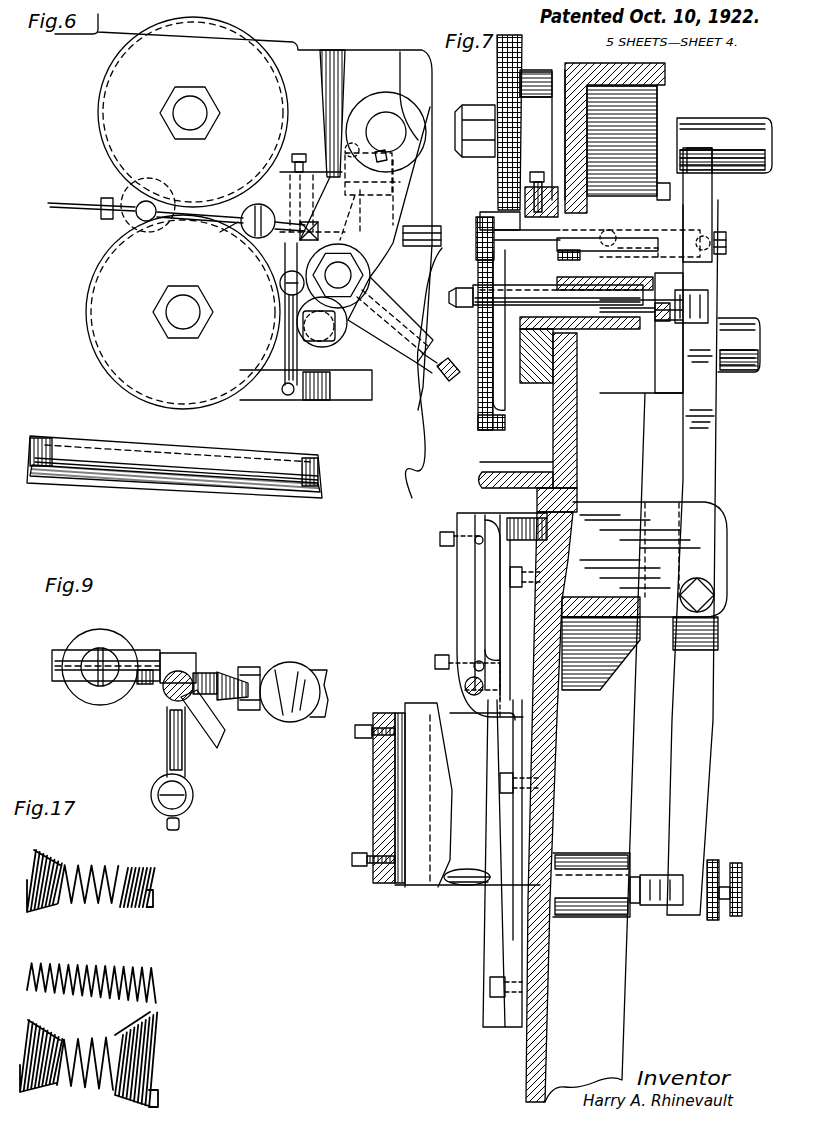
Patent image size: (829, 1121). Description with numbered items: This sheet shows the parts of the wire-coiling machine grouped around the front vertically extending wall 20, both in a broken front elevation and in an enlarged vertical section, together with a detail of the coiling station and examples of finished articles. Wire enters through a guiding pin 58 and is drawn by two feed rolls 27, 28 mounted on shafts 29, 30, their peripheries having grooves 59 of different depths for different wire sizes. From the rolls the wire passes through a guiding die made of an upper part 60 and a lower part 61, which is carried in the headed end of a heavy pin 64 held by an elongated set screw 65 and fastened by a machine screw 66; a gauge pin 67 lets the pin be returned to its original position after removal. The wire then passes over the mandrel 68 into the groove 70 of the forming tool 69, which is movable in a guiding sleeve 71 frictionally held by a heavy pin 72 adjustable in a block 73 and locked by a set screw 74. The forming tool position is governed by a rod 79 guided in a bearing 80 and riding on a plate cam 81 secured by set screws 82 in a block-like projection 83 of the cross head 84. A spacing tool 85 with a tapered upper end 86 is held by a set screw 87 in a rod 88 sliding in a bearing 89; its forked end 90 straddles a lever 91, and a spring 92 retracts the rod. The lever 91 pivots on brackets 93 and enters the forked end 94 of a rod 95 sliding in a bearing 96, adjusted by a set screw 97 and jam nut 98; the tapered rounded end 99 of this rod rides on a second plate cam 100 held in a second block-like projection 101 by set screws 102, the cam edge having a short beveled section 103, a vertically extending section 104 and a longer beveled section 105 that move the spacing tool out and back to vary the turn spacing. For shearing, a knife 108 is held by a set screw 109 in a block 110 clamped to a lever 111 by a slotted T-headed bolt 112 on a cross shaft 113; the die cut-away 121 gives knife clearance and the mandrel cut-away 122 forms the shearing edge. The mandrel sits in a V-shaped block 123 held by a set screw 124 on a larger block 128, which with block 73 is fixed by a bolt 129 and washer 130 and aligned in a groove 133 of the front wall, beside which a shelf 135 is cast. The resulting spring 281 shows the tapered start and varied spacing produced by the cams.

In FIG. 7, the front vertically extending wall 20 is at (565, 76).
In FIG. 6, the feed roll 27 is at (100, 91).
In FIG. 7, the feed roll 27 is at (518, 56).
In FIG. 6, the feed roll 28 is at (88, 314).
In FIG. 7, the feed roll 28 is at (482, 430).
In FIG. 6, the upper feed roll shaft 29 is at (190, 113).
In FIG. 7, the upper feed roll shaft 29 is at (732, 122).
In FIG. 6, the lower feed roll shaft 30 is at (183, 312).
In FIG. 7, the lower feed roll shaft 30 is at (740, 372).
In FIG. 6, the guiding pin 58 is at (128, 215).
In FIG. 7, the grooves 59 is at (497, 70).
In FIG. 6, the upper guiding die part 60 is at (288, 207).
In FIG. 7, the upper guiding die part 60 is at (498, 226).
In FIG. 9, the upper guiding die part 60 is at (145, 650).
In FIG. 6, the lower guiding die part 61 is at (222, 234).
In FIG. 9, the lower guiding die part 61 is at (56, 674).
In FIG. 7, the heavy pin 64 is at (609, 230).
In FIG. 9, the heavy pin 64 is at (78, 645).
In FIG. 7, the elongated set screw 65 is at (628, 234).
In FIG. 6, the machine screw 66 is at (252, 235).
In FIG. 7, the machine screw 66 is at (478, 233).
In FIG. 9, the machine screw 66 is at (90, 681).
In FIG. 7, the gauge pin 67 is at (722, 230).
In FIG. 6, the mandrel 68 is at (307, 220).
In FIG. 7, the mandrel 68 is at (582, 238).
In FIG. 9, the mandrel 68 is at (200, 672).
In FIG. 7, the forming tool 69 is at (450, 257).
In FIG. 9, the forming tool 69 is at (232, 672).
In FIG. 9, the groove 70 is at (254, 667).
In FIG. 6, the guiding sleeve 71 is at (411, 258).
In FIG. 9, the guiding sleeve 71 is at (322, 670).
In FIG. 9, the heavy pin 72 is at (288, 662).
In FIG. 6, the block 73 is at (374, 374).
In FIG. 6, the set screw 74 is at (356, 143).
In FIG. 7, the rod 79 is at (485, 684).
In FIG. 7, the bearing 80 is at (465, 687).
In FIG. 7, the plate cam 81 is at (476, 606).
In FIG. 7, the set screws 82 is at (435, 662).
In FIG. 7, the block-like projection 83 is at (457, 582).
In FIG. 7, the cross head 84 is at (508, 519).
In FIG. 6, the spacing tool 85 is at (288, 396).
In FIG. 7, the spacing tool 85 is at (490, 360).
In FIG. 9, the spacing tool 85 is at (180, 825).
In FIG. 6, the tapered upper end 86 is at (280, 255).
In FIG. 7, the tapered upper end 86 is at (490, 268).
In FIG. 9, the tapered upper end 86 is at (168, 715).
In FIG. 7, the set screw 87 is at (460, 290).
In FIG. 9, the set screw 87 is at (187, 794).
In FIG. 7, the rod 88 is at (564, 298).
In FIG. 9, the rod 88 is at (194, 800).
In FIG. 7, the bearing 89 is at (586, 295).
In FIG. 7, the forked end 90 is at (710, 297).
In FIG. 7, the lever 91 is at (718, 419).
In FIG. 7, the spring 92 is at (665, 318).
In FIG. 7, the brackets 93 is at (644, 559).
In FIG. 7, the forked end 94 is at (658, 906).
In FIG. 7, the rod 95 is at (486, 886).
In FIG. 7, the bearing 96 is at (570, 852).
In FIG. 7, the set screw 97 is at (733, 918).
In FIG. 7, the jam nut 98 is at (709, 918).
In FIG. 7, the tapered rounded end 99 is at (462, 870).
In FIG. 7, the second plate cam 100 is at (412, 880).
In FIG. 7, the second block-like projection 101 is at (370, 818).
In FIG. 7, the set screws 102 is at (352, 866).
In FIG. 7, the short beveled section 103 is at (440, 882).
In FIG. 7, the vertically extending section 104 is at (451, 820).
In FIG. 7, the longer beveled section 105 is at (447, 750).
In FIG. 9, the shearing knife 108 is at (210, 738).
In FIG. 6, the set screw 109 is at (442, 381).
In FIG. 6, the block 110 is at (385, 312).
In FIG. 6, the lever 111 is at (412, 220).
In FIG. 6, the slotted T-headed bolt 112 is at (362, 276).
In FIG. 6, the cross shaft 113 is at (386, 132).
In FIG. 9, the cut-away 121 is at (178, 652).
In FIG. 7, the cut-away 122 is at (482, 243).
In FIG. 9, the cut-away 122 is at (166, 694).
In FIG. 6, the V-shaped block 123 is at (283, 242).
In FIG. 7, the V-shaped block 123 is at (580, 257).
In FIG. 6, the set screw 124 is at (299, 153).
In FIG. 7, the set screw 124 is at (537, 172).
In FIG. 6, the block 128 is at (280, 185).
In FIG. 7, the block 128 is at (530, 384).
In FIG. 6, the bolt 129 is at (330, 332).
In FIG. 6, the washer 130 is at (322, 345).
In FIG. 6, the groove 133 is at (340, 50).
In FIG. 6, the shelf 135 is at (57, 437).
In FIG. 7, the shelf 135 is at (480, 479).
In FIG. 17, the spring 281 is at (62, 860).